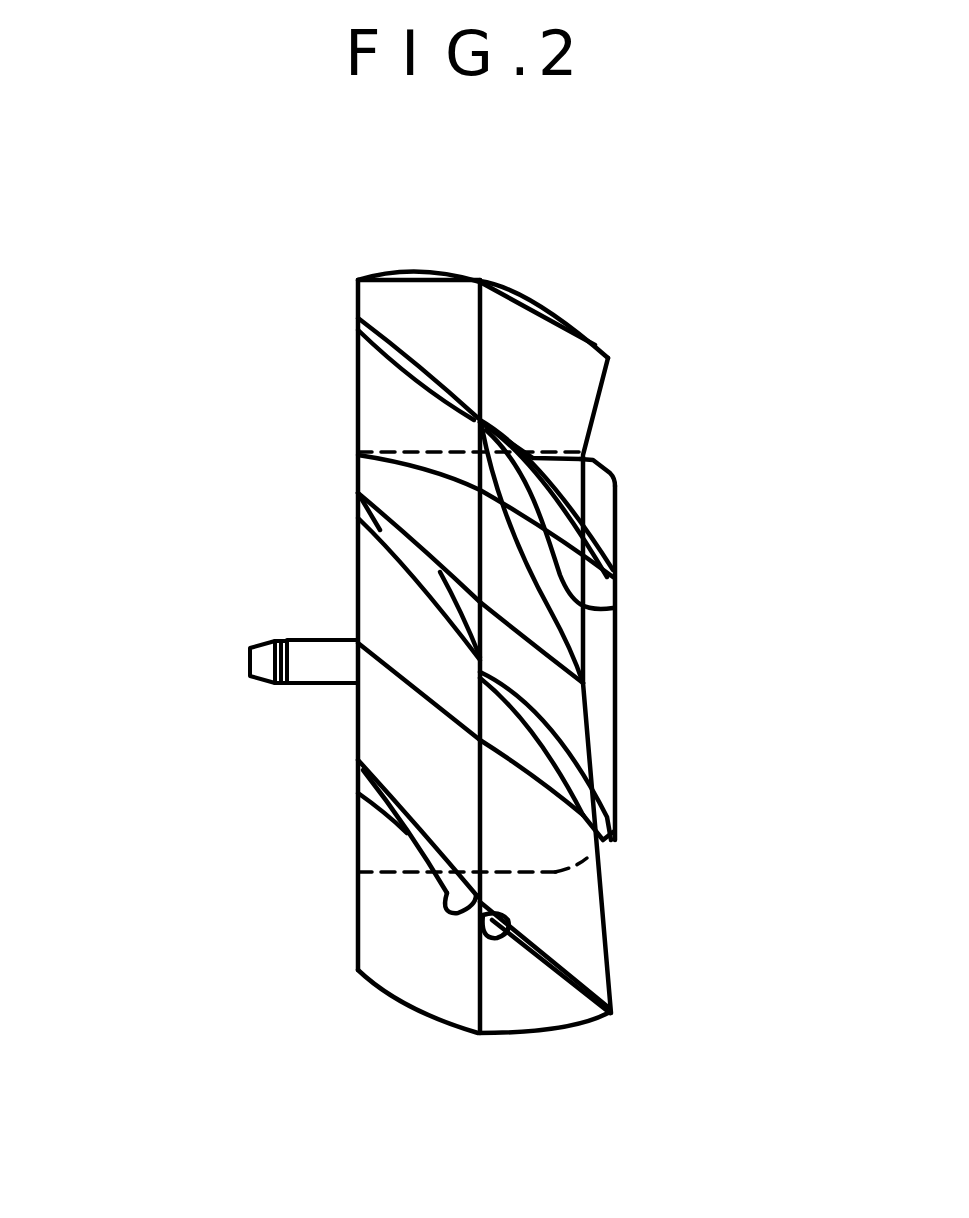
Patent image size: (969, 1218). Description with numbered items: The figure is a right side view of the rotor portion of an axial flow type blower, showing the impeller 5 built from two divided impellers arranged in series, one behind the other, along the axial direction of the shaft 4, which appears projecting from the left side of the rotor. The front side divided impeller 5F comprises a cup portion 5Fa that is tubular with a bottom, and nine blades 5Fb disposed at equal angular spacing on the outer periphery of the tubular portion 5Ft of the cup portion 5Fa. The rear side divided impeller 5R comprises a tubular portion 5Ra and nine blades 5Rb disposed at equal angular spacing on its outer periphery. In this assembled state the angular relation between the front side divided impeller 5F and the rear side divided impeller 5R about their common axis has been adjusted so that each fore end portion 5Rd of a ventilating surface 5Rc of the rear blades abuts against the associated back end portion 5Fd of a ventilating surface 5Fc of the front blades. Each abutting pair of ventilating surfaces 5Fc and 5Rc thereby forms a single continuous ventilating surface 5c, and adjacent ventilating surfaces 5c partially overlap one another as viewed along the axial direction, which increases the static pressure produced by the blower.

The impeller 5 is at (232, 1050).
The rear side divided impeller 5R is at (417, 1015).
The front side divided impeller 5F is at (542, 1035).
The tubular portion 5Ra is at (440, 452).
The blades 5Rb is at (390, 288).
The ventilating surfaces 5Rc is at (408, 364).
The fore end portions 5Rd is at (473, 428).
The cup portion 5Fa is at (610, 468).
The blades 5Fb is at (565, 352).
The ventilating surfaces 5Fc is at (613, 608).
The back end portions 5Fd is at (550, 612).
The tubular portion 5Ft is at (558, 452).
The ventilating surface 5c is at (180, 832).
The shaft 4 is at (317, 640).